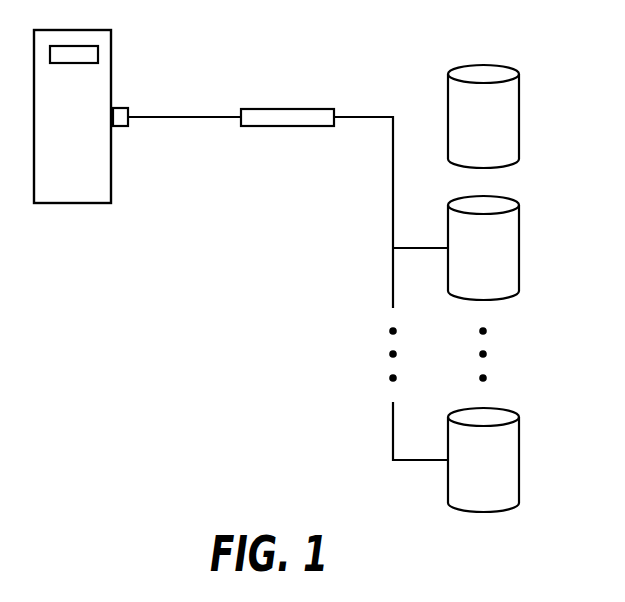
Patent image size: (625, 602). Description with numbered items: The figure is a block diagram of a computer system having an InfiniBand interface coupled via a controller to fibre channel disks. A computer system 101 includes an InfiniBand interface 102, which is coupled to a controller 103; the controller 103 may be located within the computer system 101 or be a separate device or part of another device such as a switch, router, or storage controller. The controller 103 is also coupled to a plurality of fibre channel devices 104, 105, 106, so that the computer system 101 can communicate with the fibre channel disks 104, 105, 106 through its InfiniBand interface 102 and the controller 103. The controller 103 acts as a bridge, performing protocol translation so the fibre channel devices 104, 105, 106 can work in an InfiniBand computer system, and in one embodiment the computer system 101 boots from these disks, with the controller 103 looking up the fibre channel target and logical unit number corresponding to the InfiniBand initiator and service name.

The computer system 101 is at (75, 30).
The InfiniBand interface 102 is at (120, 107).
The controller 103 is at (290, 108).
The fibre channel device 104 is at (520, 117).
The fibre channel device 105 is at (520, 248).
The fibre channel device 106 is at (520, 461).